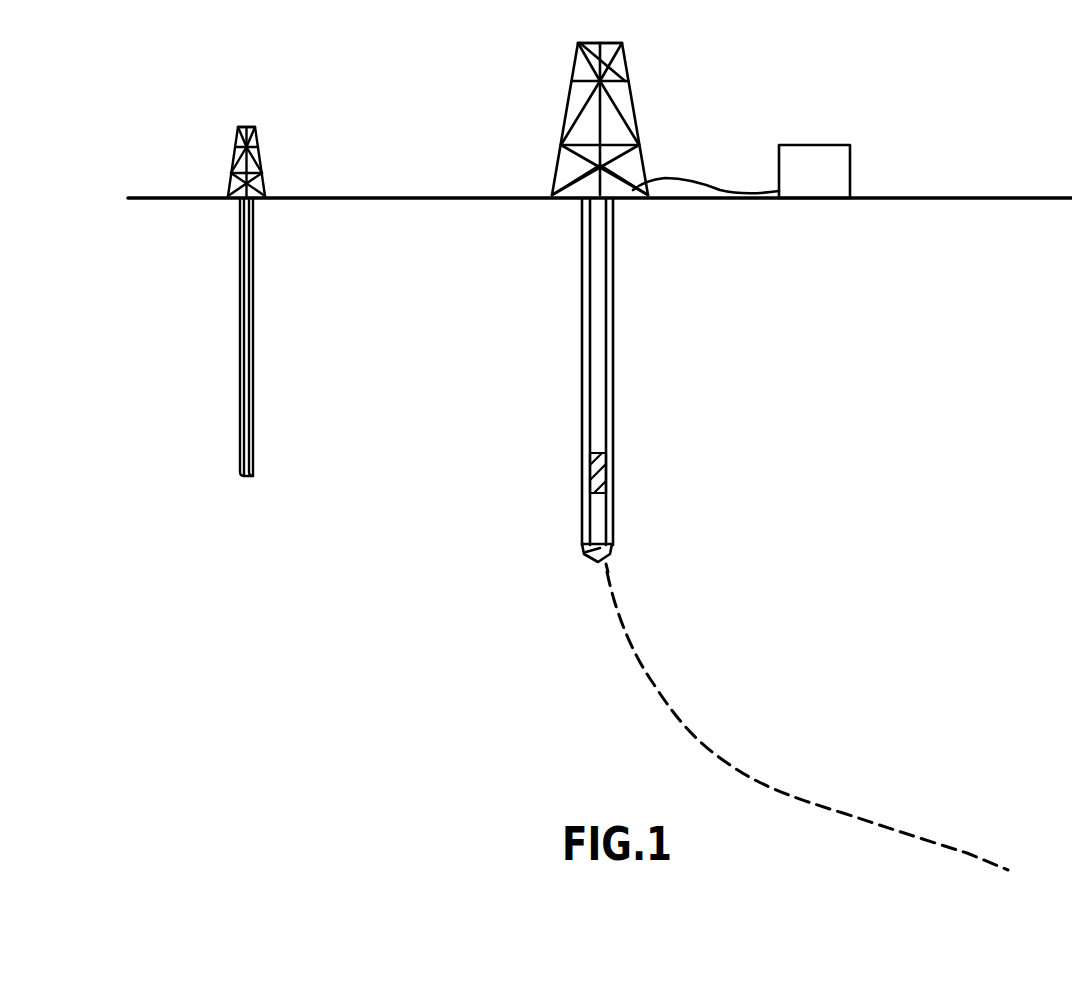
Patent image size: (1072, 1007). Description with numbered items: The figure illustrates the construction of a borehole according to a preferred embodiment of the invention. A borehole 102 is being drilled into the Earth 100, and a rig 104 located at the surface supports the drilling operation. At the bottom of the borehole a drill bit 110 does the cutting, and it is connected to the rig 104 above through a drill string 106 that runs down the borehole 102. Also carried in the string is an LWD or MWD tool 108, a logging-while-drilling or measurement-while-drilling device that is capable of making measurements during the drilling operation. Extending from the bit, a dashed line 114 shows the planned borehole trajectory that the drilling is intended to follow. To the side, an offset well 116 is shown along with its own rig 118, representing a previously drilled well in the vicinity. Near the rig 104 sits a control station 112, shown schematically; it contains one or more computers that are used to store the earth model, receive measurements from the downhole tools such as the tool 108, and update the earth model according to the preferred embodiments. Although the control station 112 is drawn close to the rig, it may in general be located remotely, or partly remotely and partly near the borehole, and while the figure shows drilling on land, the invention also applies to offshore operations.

The Earth 100 is at (897, 56).
The borehole 102 is at (615, 275).
The rig 104 is at (636, 115).
The drill string 106 is at (608, 354).
The LWD or MWD tool 108 is at (612, 471).
The drill bit 110 is at (583, 549).
The control station 112 is at (851, 172).
The dashed line 114 is at (661, 692).
The offset well 116 is at (251, 396).
The rig 118 is at (258, 153).